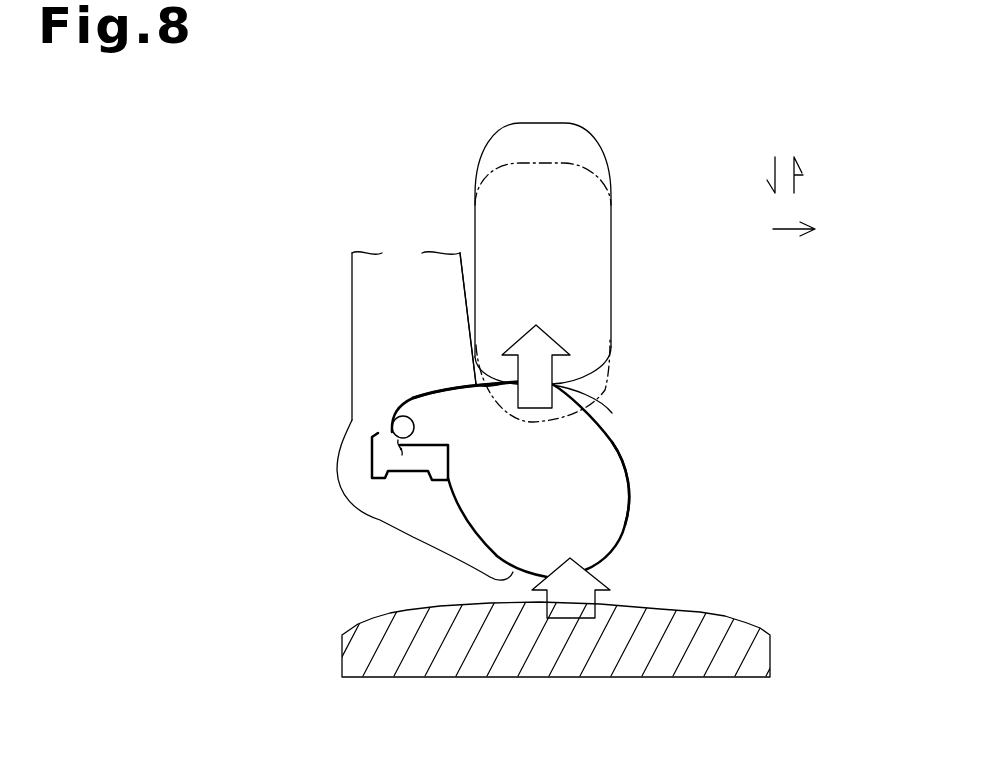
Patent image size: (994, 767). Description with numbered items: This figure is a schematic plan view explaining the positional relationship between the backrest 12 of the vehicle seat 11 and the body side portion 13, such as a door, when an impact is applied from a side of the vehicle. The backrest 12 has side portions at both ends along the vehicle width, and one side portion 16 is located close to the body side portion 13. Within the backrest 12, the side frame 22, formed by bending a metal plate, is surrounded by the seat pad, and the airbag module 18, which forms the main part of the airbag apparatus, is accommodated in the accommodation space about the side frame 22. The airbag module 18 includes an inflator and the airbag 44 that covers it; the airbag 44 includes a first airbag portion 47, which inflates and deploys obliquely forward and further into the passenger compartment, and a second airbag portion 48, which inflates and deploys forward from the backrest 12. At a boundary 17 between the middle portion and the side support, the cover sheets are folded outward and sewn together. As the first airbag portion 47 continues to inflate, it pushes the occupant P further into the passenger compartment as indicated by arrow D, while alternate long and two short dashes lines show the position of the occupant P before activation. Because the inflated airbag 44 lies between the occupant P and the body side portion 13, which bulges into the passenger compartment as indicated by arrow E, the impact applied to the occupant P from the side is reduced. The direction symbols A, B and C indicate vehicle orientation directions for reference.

The vehicle seat 11 is at (352, 336).
The backrest 12 is at (364, 318).
The body side portion 13 is at (770, 647).
The side portion 16 is at (360, 512).
The boundary 17 is at (474, 400).
The airbag module 18 is at (424, 383).
The side frame 22 is at (413, 473).
The airbag 44 is at (630, 483).
The first airbag portion 47 is at (455, 387).
The second airbag portion 48 is at (627, 537).
The arrow D is at (537, 406).
The arrow E is at (595, 598).
The occupant P is at (607, 388).
The direction A is at (775, 175).
The direction B is at (803, 175).
The direction C is at (793, 230).